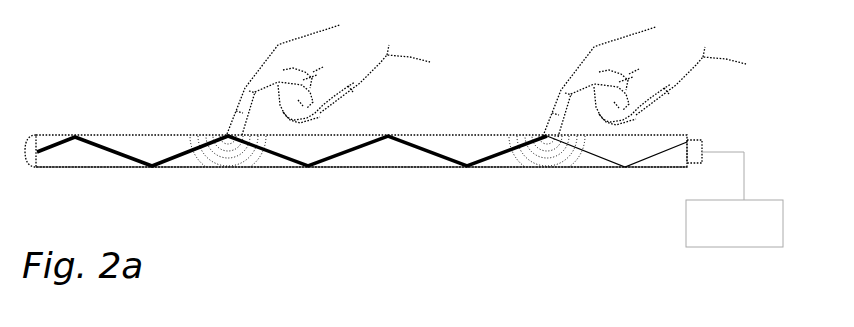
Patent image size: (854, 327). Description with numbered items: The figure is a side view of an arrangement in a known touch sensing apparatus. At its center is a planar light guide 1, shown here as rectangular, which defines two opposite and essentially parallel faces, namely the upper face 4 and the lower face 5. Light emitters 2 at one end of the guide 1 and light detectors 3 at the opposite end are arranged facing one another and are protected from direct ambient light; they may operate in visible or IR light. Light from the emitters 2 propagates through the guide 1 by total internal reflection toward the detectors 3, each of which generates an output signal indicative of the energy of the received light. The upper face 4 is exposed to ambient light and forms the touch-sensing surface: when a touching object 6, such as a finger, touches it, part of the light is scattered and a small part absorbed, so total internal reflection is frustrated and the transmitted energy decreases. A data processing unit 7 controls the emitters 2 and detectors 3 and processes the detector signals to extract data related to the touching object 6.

The planar light guide 1 is at (369, 159).
The light emitters 2 is at (25, 150).
The light detectors 3 is at (706, 138).
The upper face 4 is at (195, 135).
The lower face 5 is at (182, 168).
The touching object 6 is at (283, 55).
The data processing unit 7 is at (687, 223).